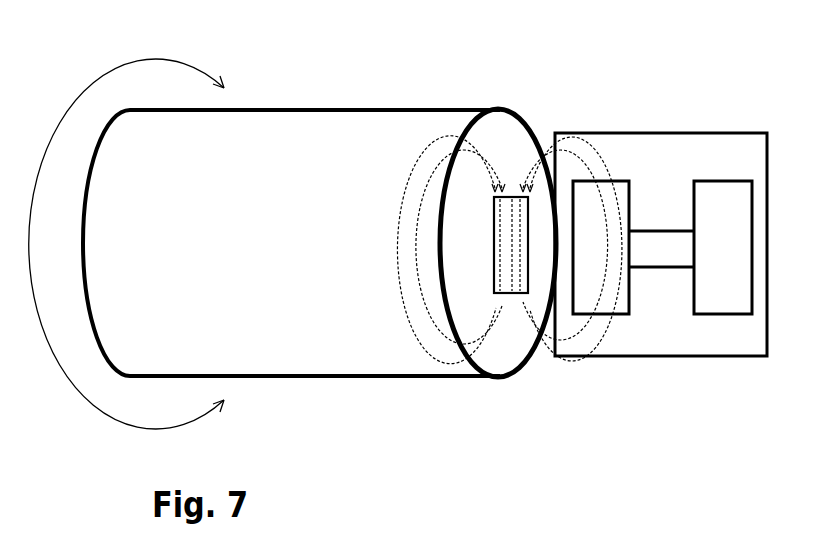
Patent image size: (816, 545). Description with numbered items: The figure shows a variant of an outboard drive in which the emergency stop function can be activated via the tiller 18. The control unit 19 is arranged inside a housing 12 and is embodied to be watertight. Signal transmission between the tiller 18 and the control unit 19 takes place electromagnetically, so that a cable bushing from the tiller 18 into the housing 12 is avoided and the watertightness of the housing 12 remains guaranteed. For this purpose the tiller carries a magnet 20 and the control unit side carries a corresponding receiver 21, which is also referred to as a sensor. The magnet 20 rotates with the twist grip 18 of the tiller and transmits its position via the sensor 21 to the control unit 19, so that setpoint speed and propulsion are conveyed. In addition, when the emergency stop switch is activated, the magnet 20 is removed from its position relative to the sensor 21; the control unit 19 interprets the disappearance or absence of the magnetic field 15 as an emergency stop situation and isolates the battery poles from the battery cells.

The housing 12 is at (661, 265).
The magnetic field 15 is at (501, 250).
The tiller 18 is at (319, 243).
The control unit 19 is at (723, 247).
The magnet 20 is at (511, 261).
The receiver 21 is at (601, 247).